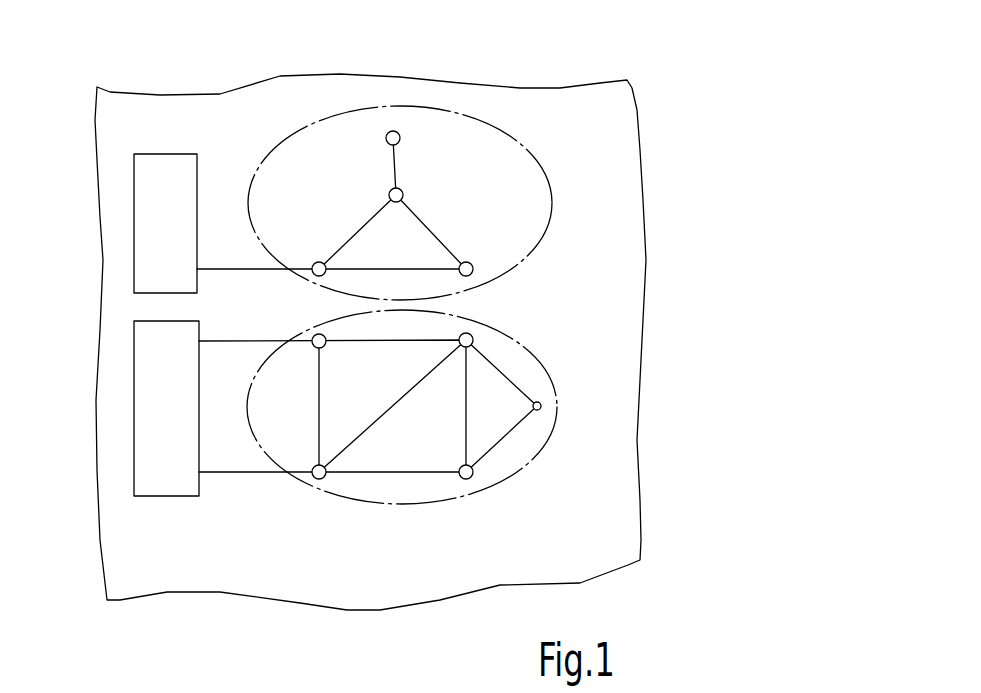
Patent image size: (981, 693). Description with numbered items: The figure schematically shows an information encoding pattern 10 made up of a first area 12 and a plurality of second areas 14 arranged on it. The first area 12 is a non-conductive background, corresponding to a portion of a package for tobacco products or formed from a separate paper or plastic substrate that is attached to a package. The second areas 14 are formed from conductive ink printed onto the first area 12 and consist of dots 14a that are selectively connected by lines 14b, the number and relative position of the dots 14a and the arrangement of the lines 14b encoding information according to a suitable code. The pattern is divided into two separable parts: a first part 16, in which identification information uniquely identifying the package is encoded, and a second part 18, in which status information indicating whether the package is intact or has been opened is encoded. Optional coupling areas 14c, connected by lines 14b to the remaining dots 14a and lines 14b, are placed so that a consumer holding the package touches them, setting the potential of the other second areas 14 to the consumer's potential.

The information encoding pattern 10 is at (700, 189).
The first area 12 is at (608, 437).
The second areas 14 is at (516, 306).
The dots 14a is at (407, 187).
The lines 14b is at (435, 230).
The coupling areas 14c is at (134, 234).
The first part 16 is at (378, 502).
The second part 18 is at (432, 110).